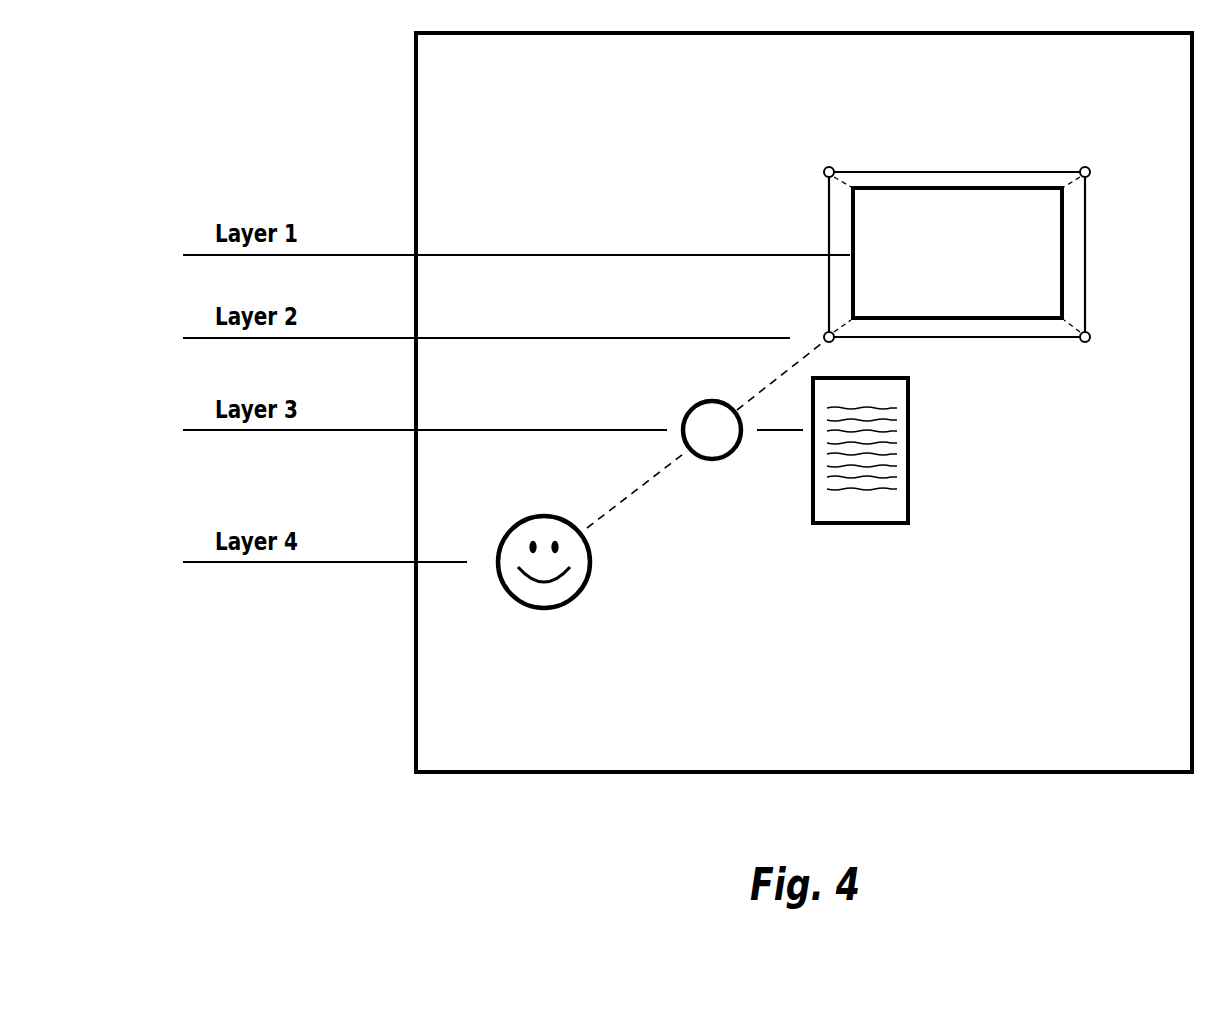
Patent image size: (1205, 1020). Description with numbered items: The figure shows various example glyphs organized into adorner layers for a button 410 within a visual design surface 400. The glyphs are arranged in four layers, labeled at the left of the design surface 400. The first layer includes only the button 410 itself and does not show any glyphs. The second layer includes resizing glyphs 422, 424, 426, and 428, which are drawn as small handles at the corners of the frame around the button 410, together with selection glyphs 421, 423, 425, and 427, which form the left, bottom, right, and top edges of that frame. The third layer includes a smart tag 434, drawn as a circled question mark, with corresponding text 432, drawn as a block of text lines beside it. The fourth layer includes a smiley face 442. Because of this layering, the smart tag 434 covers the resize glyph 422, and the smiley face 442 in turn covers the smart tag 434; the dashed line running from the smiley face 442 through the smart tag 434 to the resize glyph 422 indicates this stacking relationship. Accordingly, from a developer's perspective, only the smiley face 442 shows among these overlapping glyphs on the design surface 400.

The visual design surface 400 is at (1145, 745).
The button 410 is at (936, 295).
The selection glyph 421 is at (827, 240).
The resizing glyph 422 is at (826, 336).
The selection glyph 423 is at (1023, 340).
The resizing glyph 424 is at (1086, 342).
The selection glyph 425 is at (1087, 258).
The resizing glyph 426 is at (1086, 168).
The selection glyph 427 is at (953, 170).
The resizing glyph 428 is at (826, 170).
The text 432 is at (862, 491).
The smart tag 434 is at (707, 418).
The smiley face 442 is at (540, 540).